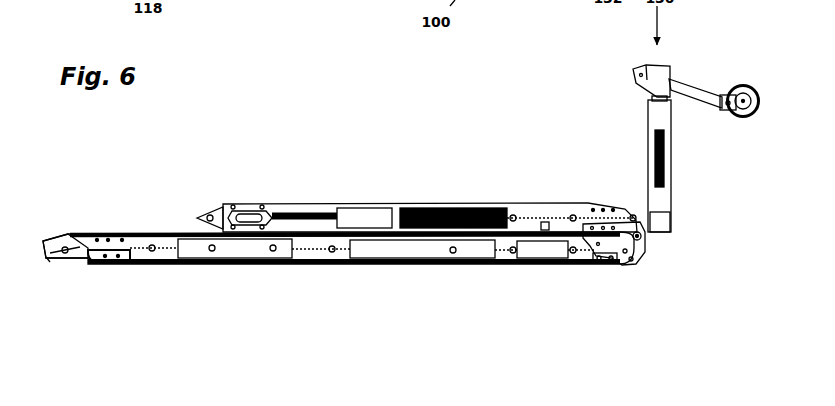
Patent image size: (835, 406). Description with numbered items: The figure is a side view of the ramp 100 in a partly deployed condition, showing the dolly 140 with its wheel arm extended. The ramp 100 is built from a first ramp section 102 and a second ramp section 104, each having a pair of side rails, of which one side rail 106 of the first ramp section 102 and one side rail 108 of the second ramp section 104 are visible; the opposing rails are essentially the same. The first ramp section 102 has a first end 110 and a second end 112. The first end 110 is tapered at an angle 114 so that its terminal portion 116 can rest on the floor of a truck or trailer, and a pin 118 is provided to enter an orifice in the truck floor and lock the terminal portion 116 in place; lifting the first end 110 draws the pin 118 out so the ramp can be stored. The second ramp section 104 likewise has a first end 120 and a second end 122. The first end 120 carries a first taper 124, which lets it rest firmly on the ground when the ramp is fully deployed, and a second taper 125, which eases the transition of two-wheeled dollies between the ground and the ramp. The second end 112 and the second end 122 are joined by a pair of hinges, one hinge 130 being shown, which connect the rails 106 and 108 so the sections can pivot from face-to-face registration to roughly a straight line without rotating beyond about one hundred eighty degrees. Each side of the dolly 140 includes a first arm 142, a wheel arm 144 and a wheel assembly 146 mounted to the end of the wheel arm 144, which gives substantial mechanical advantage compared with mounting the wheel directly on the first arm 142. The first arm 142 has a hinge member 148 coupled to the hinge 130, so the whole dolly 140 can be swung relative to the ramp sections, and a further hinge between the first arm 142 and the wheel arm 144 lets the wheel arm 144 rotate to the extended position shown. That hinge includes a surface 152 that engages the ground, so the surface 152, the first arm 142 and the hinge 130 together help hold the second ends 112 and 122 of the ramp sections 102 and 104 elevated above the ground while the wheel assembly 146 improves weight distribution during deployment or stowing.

The ramp 100 is at (367, 293).
The first ramp section 102 is at (312, 270).
The second ramp section 104 is at (433, 190).
The side rail 106 is at (485, 245).
The side rail 108 is at (318, 199).
The first end 110 is at (78, 230).
The second end 112 is at (598, 262).
The angle 114 is at (80, 231).
The terminal portion 116 is at (50, 256).
The pin 118 is at (72, 275).
The first end 120 is at (238, 188).
The second end 122 is at (641, 225).
The first taper 124 is at (206, 206).
The second taper 125 is at (213, 222).
The hinge 130 is at (630, 275).
The dolly 140 is at (613, 137).
The first arm 142 is at (667, 148).
The wheel arm 144 is at (700, 98).
The wheel assembly 146 is at (737, 90).
The hinge member 148 is at (646, 232).
The surface 152 is at (662, 68).